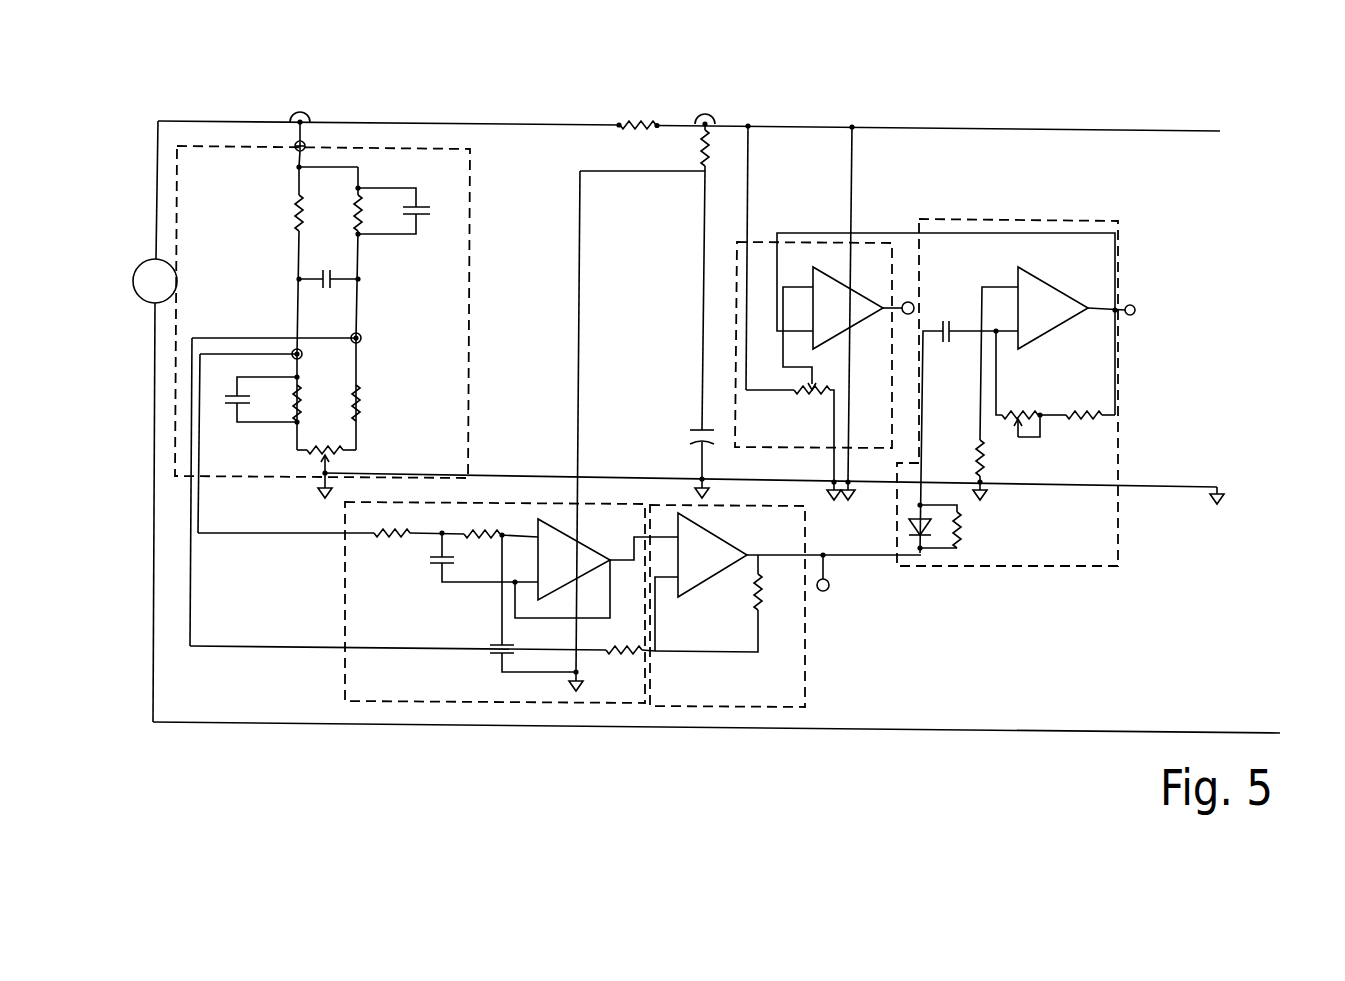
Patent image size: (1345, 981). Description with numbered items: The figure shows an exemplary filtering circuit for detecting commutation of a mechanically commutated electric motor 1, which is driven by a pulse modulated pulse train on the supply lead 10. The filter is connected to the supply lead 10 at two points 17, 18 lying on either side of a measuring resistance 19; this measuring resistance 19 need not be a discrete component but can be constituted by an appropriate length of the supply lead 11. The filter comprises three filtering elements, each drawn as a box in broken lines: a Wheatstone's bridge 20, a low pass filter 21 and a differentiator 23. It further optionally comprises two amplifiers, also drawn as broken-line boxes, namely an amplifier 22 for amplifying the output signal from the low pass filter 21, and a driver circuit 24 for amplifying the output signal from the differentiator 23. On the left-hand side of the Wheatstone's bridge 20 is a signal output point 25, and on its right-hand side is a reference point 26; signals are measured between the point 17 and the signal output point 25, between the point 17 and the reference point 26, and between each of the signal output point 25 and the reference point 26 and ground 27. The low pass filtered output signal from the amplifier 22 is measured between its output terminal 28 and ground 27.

The mechanically commutated electric motor 1 is at (148, 303).
The supply lead 10 is at (387, 122).
The supply lead 11 is at (902, 730).
The point 17 is at (301, 112).
The point 18 is at (702, 114).
The measuring resistance 19 is at (632, 120).
The Wheatstone's bridge 20 is at (470, 200).
The low pass filter 21 is at (473, 703).
The amplifier 22 is at (703, 707).
The differentiator 23 is at (1015, 219).
The driver circuit 24 is at (867, 242).
The signal output point 25 is at (295, 352).
The reference point 26 is at (358, 337).
The ground 27 is at (1155, 482).
The output terminal 28 is at (823, 592).